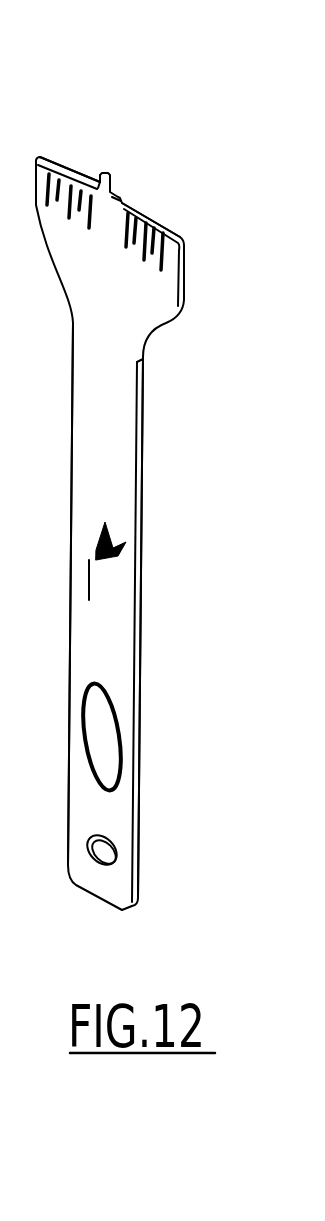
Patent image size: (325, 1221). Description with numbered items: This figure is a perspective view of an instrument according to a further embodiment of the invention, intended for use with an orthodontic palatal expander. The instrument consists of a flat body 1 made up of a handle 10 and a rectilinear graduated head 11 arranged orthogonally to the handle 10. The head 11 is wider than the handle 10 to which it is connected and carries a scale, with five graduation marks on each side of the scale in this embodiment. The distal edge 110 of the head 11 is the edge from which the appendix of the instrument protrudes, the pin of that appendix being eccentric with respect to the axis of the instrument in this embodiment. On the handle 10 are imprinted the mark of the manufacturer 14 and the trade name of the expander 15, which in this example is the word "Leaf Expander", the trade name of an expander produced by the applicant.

The flat body 1 is at (131, 460).
The handle 10 is at (143, 530).
The graduated head 11 is at (185, 280).
The distal edge 110 is at (143, 212).
The mark of the manufacturer 14 is at (85, 742).
The trade name of the expander 15 is at (93, 603).